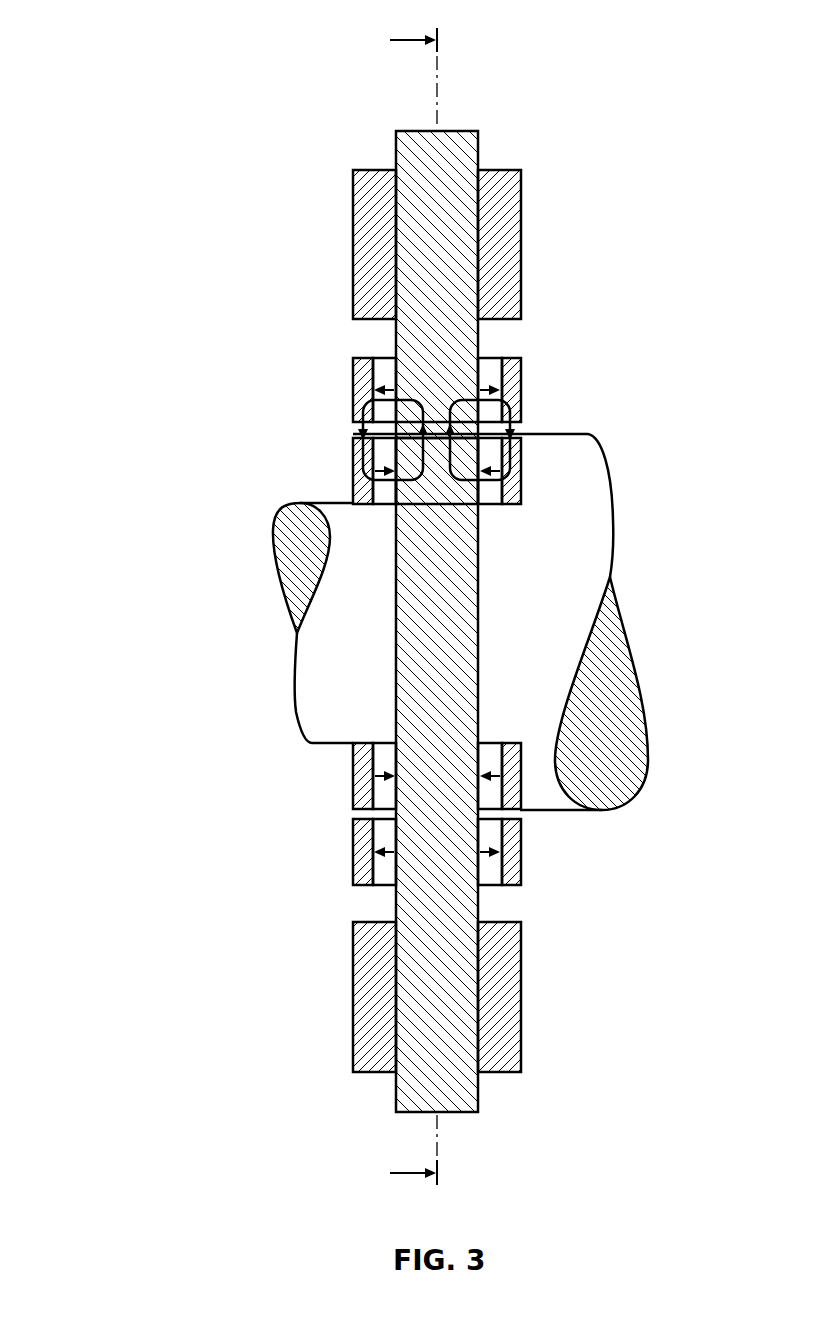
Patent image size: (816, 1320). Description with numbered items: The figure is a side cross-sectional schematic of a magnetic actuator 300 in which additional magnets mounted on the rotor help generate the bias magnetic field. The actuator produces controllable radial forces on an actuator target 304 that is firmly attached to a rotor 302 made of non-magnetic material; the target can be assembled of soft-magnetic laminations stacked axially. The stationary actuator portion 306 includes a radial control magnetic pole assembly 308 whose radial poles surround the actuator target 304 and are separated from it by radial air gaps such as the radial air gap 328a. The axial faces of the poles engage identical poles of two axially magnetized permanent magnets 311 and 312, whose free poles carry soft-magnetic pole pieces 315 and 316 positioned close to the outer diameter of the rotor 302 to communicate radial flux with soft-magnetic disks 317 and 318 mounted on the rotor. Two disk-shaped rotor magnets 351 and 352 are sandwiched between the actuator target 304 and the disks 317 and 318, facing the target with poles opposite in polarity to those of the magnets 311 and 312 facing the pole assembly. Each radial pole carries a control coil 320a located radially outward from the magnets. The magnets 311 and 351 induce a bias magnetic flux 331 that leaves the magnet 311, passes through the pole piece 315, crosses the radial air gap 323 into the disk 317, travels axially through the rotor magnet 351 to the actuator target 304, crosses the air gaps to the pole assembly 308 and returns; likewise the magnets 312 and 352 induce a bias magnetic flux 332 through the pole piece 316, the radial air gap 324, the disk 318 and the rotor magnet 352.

The magnetic actuator 300 is at (144, 42).
The rotor 302 is at (548, 537).
The actuator target 304 is at (437, 487).
The stationary actuator portion 306 is at (320, 141).
The radial control magnetic pole assembly 308 is at (462, 150).
The axially magnetized permanent magnet 311 is at (490, 360).
The axially magnetized permanent magnet 312 is at (383, 368).
The soft-magnetic pole piece 315 is at (512, 390).
The soft-magnetic pole piece 316 is at (363, 387).
The soft-magnetic disk 317 is at (510, 475).
The soft-magnetic disk 318 is at (365, 477).
The control coil 320a is at (510, 222).
The radial air gap 323 is at (514, 428).
The radial air gap 324 is at (360, 428).
The radial air gap 328a is at (437, 425).
The bias magnetic flux 331 is at (510, 442).
The bias magnetic flux 332 is at (363, 450).
The rotor magnet 351 is at (488, 483).
The rotor magnet 352 is at (385, 490).